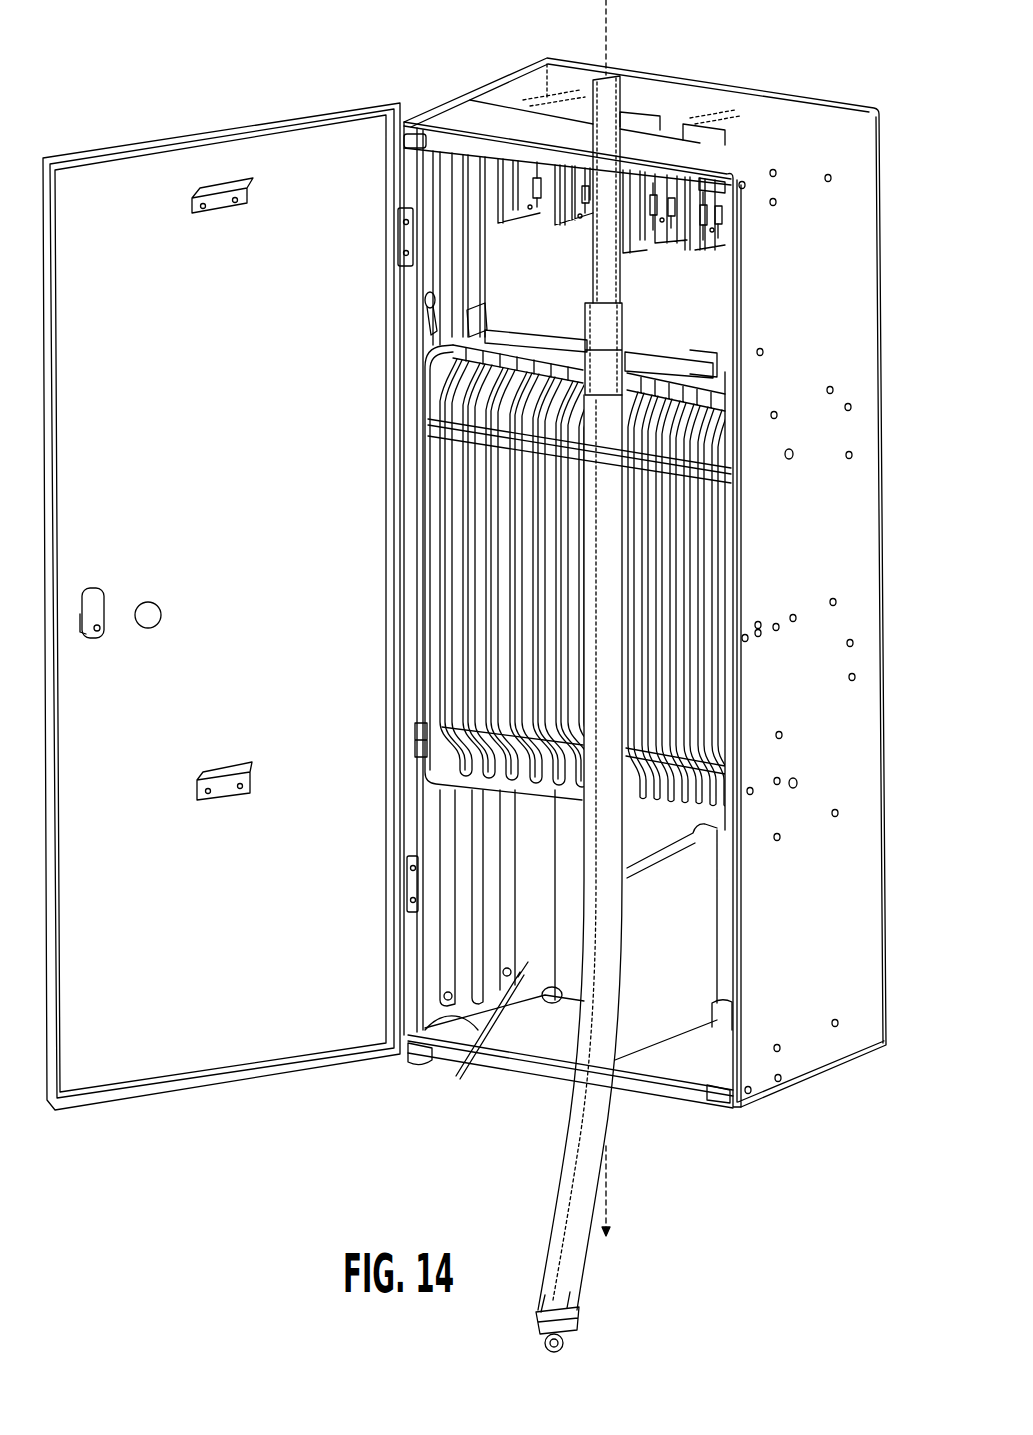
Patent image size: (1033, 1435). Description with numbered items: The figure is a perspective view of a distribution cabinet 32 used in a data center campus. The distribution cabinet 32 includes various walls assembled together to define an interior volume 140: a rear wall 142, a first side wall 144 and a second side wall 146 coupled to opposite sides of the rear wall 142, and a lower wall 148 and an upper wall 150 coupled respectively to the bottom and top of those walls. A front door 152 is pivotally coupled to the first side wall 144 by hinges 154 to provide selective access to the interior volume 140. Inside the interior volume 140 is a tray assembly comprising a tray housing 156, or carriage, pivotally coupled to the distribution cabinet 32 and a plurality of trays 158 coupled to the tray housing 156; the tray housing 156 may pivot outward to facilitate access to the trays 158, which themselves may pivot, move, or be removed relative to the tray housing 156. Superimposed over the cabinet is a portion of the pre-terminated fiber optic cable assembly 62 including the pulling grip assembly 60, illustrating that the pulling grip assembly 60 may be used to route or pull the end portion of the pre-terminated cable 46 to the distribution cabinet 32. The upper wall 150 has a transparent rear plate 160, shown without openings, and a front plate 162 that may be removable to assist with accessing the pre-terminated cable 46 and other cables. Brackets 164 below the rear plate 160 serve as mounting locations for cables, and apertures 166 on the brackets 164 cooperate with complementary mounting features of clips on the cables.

The distribution cabinet 32 is at (444, 52).
The pre-terminated cable 46 is at (612, 102).
The pulling grip assembly 60 is at (604, 1266).
The pre-terminated fiber optic cable assembly 62 is at (652, 1202).
The interior volume 140 is at (456, 1076).
The rear wall 142 is at (782, 97).
The first side wall 144 is at (412, 170).
The second side wall 146 is at (818, 237).
The lower wall 148 is at (547, 1041).
The upper wall 150 is at (690, 88).
The front door 152 is at (218, 133).
The hinges 154 is at (398, 887).
The tray housing 156 is at (433, 435).
The trays 158 is at (573, 588).
The rear plate 160 is at (516, 96).
The front plate 162 is at (467, 114).
The brackets 164 is at (688, 247).
The apertures 166 is at (590, 222).